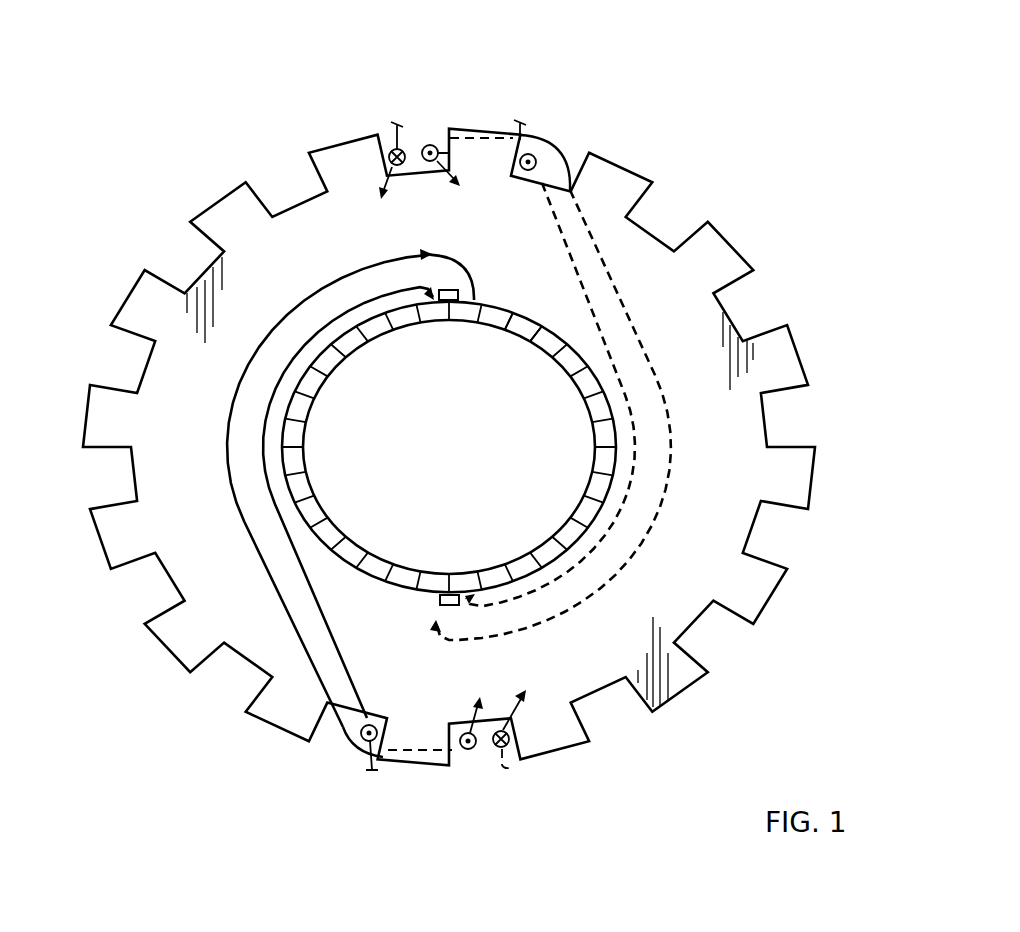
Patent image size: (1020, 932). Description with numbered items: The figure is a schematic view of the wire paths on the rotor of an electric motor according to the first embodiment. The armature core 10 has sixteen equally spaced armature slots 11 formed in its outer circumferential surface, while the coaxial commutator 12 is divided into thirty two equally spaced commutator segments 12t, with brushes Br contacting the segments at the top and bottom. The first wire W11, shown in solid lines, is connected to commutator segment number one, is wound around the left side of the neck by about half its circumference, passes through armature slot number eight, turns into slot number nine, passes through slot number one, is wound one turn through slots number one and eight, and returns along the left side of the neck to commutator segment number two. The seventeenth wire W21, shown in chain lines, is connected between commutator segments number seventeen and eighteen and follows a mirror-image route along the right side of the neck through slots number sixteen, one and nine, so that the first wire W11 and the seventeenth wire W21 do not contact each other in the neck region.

The armature core 10 is at (690, 88).
The armature slots 11 is at (296, 183).
The commutator 12 is at (513, 297).
The commutator segments 12t is at (553, 332).
The brushes Br is at (457, 283).
The first wire W11 is at (236, 382).
The seventeenth wire W21 is at (620, 370).